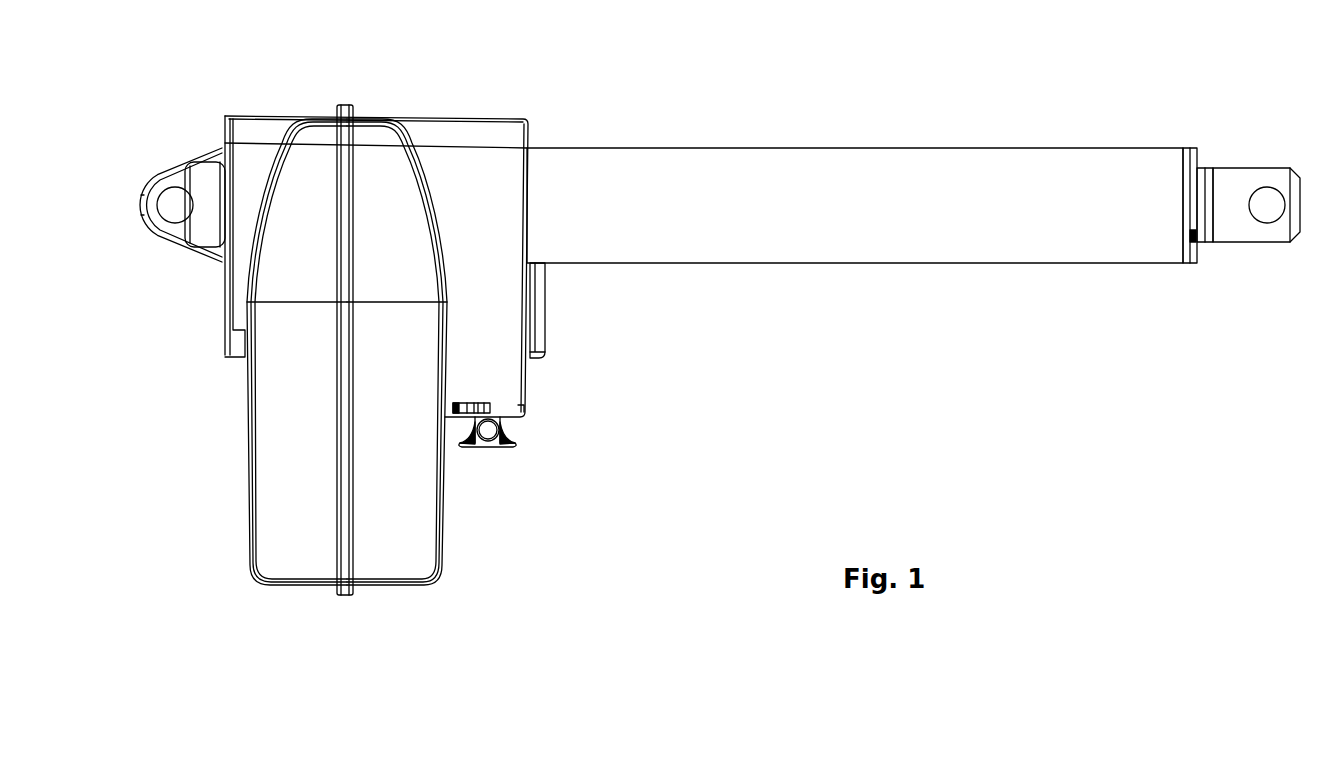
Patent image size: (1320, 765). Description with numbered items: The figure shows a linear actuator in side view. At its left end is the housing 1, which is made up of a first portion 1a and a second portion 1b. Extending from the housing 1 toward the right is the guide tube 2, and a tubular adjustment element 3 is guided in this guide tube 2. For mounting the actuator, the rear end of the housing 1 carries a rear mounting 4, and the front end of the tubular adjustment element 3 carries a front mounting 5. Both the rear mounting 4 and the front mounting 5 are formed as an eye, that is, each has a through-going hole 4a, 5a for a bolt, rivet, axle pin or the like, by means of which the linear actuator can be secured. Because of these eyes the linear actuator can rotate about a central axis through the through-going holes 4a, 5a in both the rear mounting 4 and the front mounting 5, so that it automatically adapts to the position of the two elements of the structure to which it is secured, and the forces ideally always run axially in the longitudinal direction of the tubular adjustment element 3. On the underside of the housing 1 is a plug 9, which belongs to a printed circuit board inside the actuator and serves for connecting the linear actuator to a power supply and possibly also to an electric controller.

The housing 1 is at (222, 406).
The first portion 1a is at (275, 543).
The second portion 1b is at (395, 543).
The guide tube 2 is at (895, 213).
The tubular adjustment element 3 is at (1205, 232).
The rear mounting 4 is at (159, 207).
The through-going hole 4a is at (178, 208).
The front mounting 5 is at (1256, 203).
The through-going hole 5a is at (1268, 195).
The plug 9 is at (493, 440).